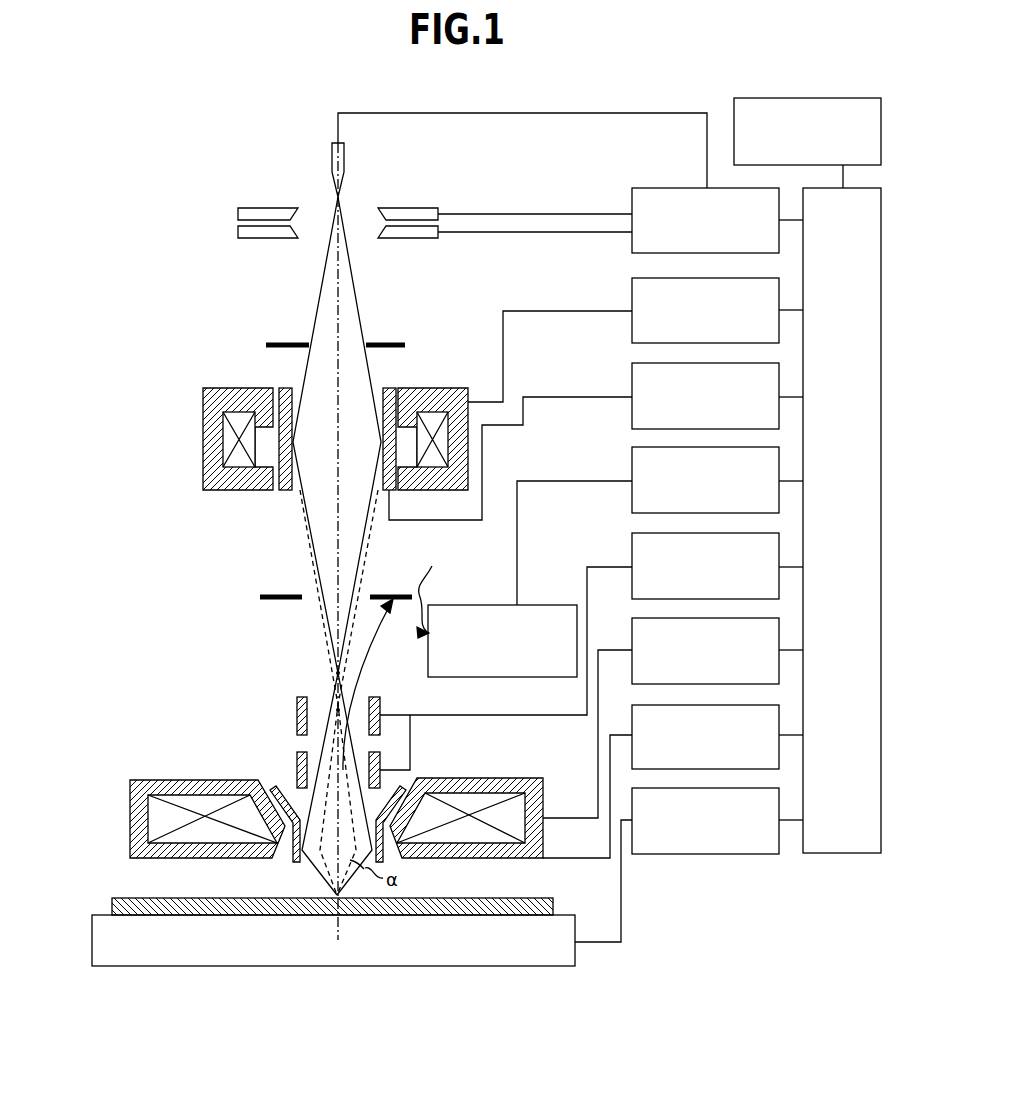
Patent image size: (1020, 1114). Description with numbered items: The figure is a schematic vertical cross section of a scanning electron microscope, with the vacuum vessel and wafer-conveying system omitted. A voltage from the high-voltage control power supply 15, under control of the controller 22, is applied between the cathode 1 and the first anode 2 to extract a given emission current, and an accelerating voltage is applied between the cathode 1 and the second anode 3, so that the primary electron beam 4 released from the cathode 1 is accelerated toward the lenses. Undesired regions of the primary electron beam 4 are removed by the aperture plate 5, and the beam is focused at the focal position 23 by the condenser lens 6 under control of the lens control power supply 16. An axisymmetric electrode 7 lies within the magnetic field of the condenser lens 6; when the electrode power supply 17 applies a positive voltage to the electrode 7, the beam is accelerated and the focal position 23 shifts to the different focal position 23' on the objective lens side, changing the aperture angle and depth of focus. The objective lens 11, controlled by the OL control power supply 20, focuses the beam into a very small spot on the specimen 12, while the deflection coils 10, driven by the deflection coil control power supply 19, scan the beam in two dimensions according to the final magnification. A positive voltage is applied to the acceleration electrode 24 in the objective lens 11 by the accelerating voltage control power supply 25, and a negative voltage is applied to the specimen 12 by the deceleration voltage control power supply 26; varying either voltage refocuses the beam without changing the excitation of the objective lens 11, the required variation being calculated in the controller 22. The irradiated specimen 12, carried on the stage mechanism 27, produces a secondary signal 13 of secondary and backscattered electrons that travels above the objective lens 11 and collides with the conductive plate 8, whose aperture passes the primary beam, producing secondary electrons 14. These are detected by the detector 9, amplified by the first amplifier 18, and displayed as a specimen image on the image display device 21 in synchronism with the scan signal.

The cathode 1 is at (332, 156).
The first anode 2 is at (275, 208).
The second anode 3 is at (250, 238).
The primary electron beam 4 is at (356, 297).
The aperture plate 5 is at (266, 345).
The condenser lens 6 is at (203, 455).
The axisymmetric electrode 7 is at (287, 490).
The conductive plate 8 is at (260, 597).
The detector 9 is at (492, 605).
The deflection coils 10 is at (297, 760).
The objective lens 11 is at (130, 815).
The specimen 12 is at (112, 898).
The secondary signal 13 is at (367, 641).
The secondary electrons 14 is at (424, 590).
The high-voltage control power supply 15 is at (632, 196).
The lens control power supply 16 is at (632, 290).
The electrode power supply 17 is at (632, 378).
The first amplifier 18 is at (632, 462).
The deflection coil control power supply 19 is at (632, 548).
The objective lens control power supply 20 is at (632, 672).
The image display device 21 is at (813, 98).
The controller 22 is at (842, 853).
The focal position 23 is at (303, 660).
The different focal position 23' is at (280, 711).
The acceleration electrode 24 is at (417, 780).
The accelerating voltage control power supply 25 is at (632, 752).
The deceleration voltage control power supply 26 is at (703, 854).
The stage mechanism 27 is at (92, 940).